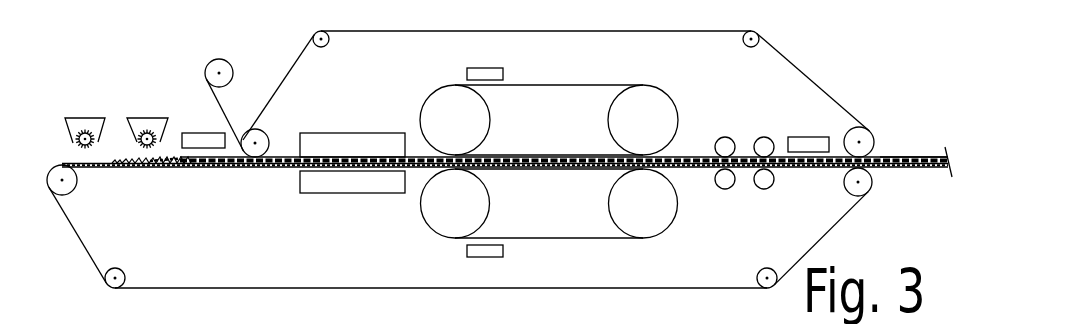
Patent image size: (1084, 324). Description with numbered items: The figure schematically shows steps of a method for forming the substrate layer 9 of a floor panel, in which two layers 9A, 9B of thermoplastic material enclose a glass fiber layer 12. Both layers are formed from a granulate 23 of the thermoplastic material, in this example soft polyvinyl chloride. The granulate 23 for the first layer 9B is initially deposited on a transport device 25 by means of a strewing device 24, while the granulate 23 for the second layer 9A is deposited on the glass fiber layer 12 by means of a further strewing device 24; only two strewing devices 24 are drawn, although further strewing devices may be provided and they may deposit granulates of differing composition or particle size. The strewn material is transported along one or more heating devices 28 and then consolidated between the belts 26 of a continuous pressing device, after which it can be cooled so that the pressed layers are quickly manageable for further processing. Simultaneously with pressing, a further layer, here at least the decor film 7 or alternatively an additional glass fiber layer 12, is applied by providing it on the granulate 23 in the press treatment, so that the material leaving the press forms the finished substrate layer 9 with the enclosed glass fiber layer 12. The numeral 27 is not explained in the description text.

The granulate 23 is at (168, 167).
The transport device 25 is at (121, 167).
The strewing device 24 is at (154, 88).
The glass fiber fleece 12 is at (140, 161).
The heating device 28 is at (197, 137).
The decor film 7 is at (226, 110).
The second layer 9A is at (257, 168).
The first layer 9B is at (280, 169).
The double belt press 27 is at (612, 65).
The belts 26 is at (557, 170).
The substrate layer 9 is at (890, 165).